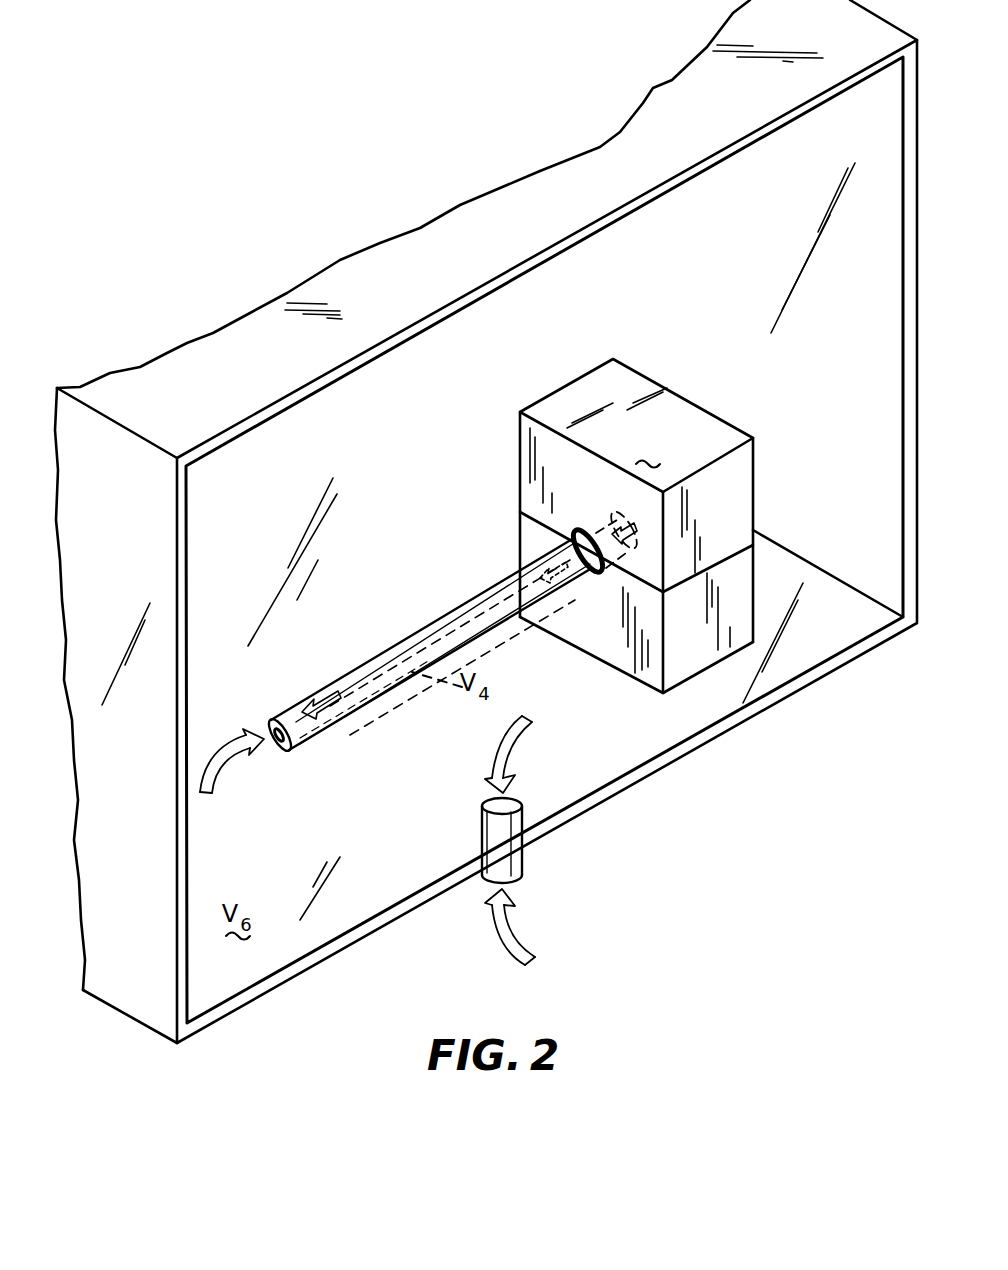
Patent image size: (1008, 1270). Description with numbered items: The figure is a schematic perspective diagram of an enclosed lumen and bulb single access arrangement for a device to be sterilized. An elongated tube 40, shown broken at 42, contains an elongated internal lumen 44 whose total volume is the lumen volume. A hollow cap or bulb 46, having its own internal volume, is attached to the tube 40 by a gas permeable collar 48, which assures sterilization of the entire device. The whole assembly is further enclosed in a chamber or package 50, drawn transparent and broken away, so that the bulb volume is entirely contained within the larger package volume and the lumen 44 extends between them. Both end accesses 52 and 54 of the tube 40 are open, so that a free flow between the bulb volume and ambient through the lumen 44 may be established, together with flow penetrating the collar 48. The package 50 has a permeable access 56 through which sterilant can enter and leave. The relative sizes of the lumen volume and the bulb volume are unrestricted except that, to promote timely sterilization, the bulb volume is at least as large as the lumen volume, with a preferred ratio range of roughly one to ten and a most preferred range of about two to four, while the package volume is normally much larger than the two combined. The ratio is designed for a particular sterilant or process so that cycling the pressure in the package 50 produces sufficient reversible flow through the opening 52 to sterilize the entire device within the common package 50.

The elongated tube 40 is at (344, 654).
The broken portion of tube 42 is at (262, 720).
The elongated internal lumen 44 is at (432, 616).
The hollow cap or bulb 46 is at (644, 372).
The gas permeable collar 48 is at (566, 532).
The chamber or package 50 is at (370, 227).
The end access 52 is at (268, 741).
The end access 54 is at (640, 518).
The permeable access 56 is at (527, 860).